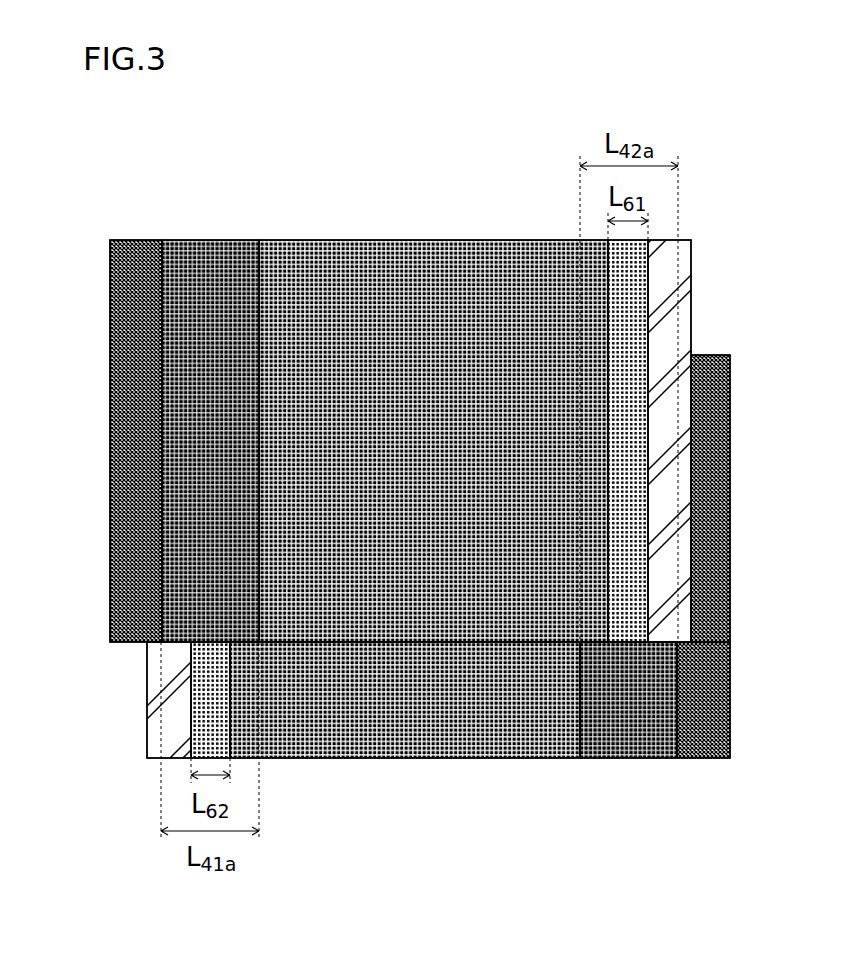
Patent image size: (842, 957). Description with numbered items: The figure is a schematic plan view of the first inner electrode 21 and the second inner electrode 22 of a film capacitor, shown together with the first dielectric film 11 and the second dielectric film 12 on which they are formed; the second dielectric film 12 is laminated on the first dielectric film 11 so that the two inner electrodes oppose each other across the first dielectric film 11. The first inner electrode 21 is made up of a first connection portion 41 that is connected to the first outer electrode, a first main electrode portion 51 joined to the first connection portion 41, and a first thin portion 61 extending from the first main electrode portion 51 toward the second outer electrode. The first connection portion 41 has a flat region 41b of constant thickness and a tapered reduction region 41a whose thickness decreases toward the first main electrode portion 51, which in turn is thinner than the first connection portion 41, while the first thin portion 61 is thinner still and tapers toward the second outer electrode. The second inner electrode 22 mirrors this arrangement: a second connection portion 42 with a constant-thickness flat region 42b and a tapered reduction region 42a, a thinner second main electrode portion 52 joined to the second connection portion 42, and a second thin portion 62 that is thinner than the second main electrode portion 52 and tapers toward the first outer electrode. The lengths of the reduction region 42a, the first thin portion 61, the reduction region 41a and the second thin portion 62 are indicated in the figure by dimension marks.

The first dielectric film 11 is at (675, 303).
The second dielectric film 12 is at (142, 663).
The first inner electrode 21 is at (377, 362).
The second inner electrode 22 is at (462, 779).
The first connection portion 41 is at (182, 384).
The reduction region 41a is at (210, 406).
The flat region 41b is at (128, 240).
The second connection portion 42 is at (656, 757).
The reduction region 42a is at (637, 733).
The flat region 42b is at (705, 736).
The first main electrode portion 51 is at (420, 263).
The second main electrode portion 52 is at (403, 717).
The first thin portion 61 is at (579, 386).
The second thin portion 62 is at (207, 710).